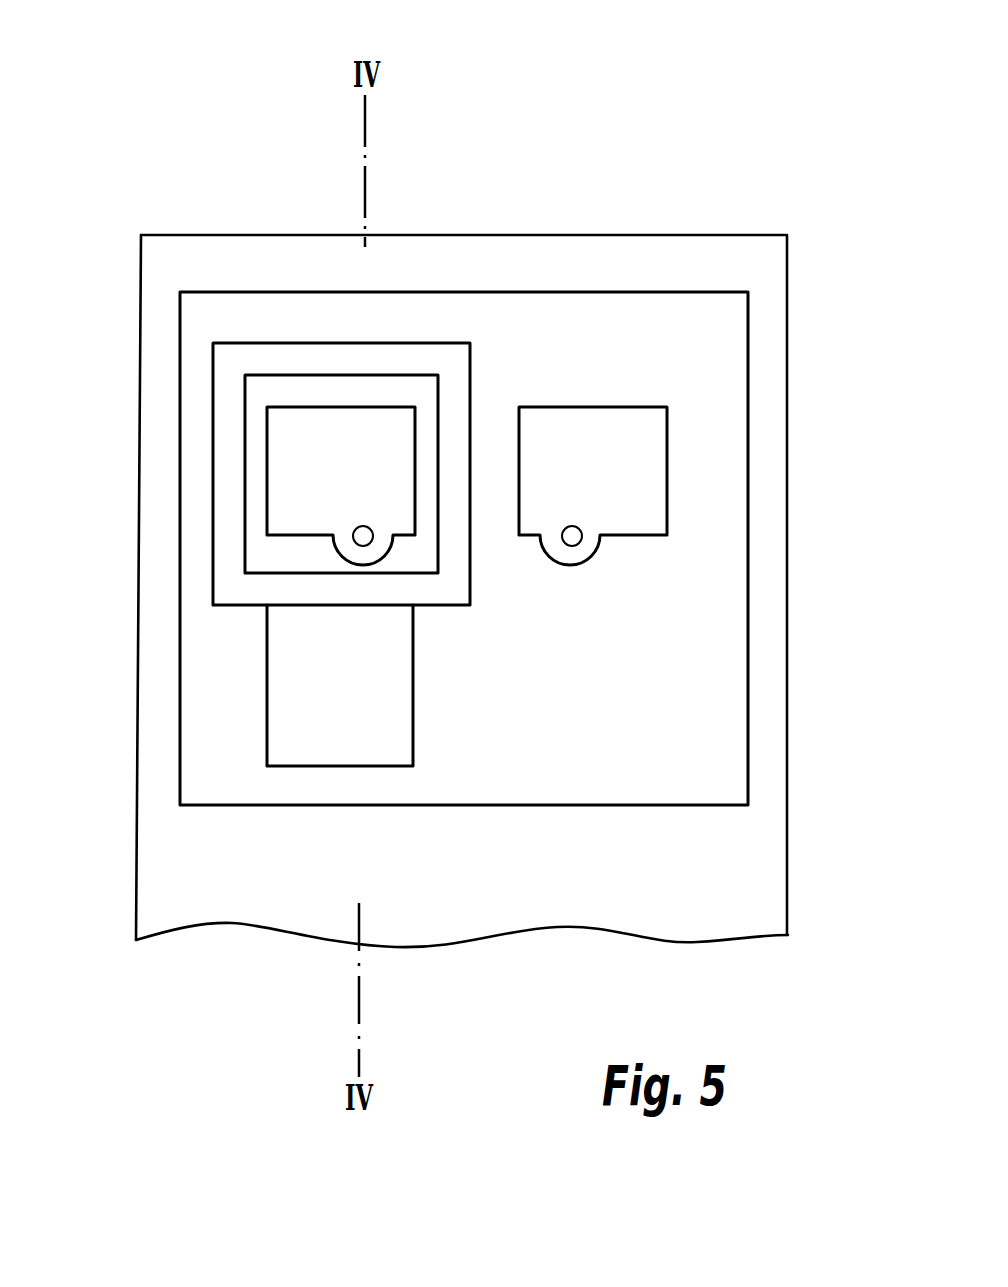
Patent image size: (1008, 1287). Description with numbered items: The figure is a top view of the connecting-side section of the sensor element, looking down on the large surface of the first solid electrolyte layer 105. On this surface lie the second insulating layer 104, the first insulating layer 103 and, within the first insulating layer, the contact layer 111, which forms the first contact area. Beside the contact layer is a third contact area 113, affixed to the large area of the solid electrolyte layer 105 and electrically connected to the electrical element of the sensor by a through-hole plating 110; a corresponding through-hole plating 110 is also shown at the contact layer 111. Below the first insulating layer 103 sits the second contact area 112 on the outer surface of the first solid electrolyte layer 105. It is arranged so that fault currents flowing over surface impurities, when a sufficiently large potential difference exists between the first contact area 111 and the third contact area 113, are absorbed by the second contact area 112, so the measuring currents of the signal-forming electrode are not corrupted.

The first insulating layer 103 is at (255, 412).
The second insulating layer 104 is at (713, 655).
The first solid electrolyte layer 105 is at (748, 878).
The through-hole plating 110 is at (373, 538).
The contact layer 111 is at (366, 474).
The second contact area 112 is at (290, 647).
The third contact area 113 is at (610, 474).